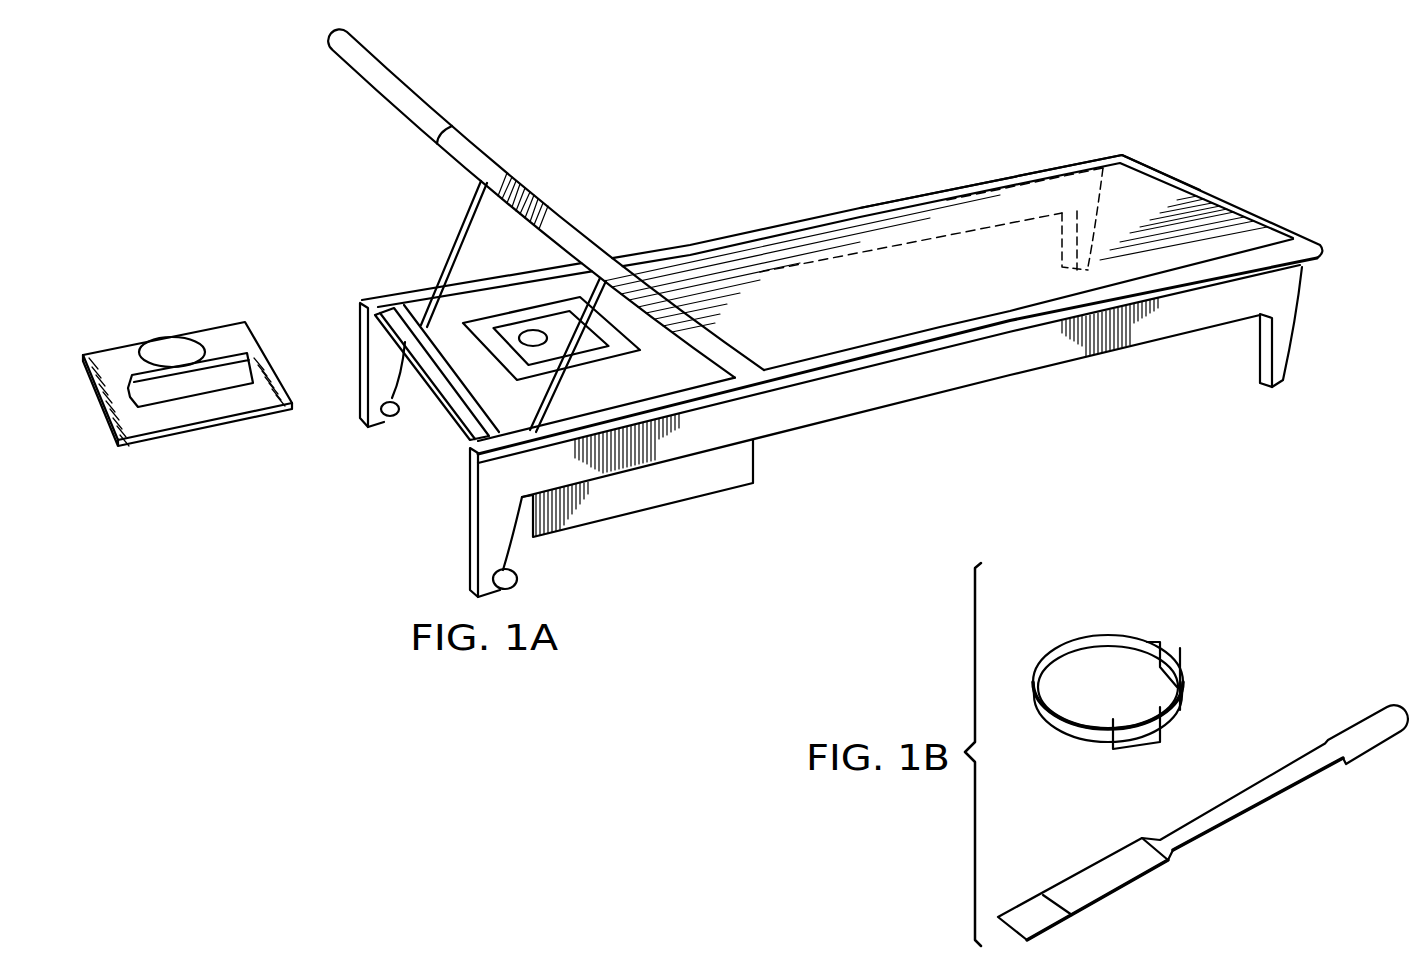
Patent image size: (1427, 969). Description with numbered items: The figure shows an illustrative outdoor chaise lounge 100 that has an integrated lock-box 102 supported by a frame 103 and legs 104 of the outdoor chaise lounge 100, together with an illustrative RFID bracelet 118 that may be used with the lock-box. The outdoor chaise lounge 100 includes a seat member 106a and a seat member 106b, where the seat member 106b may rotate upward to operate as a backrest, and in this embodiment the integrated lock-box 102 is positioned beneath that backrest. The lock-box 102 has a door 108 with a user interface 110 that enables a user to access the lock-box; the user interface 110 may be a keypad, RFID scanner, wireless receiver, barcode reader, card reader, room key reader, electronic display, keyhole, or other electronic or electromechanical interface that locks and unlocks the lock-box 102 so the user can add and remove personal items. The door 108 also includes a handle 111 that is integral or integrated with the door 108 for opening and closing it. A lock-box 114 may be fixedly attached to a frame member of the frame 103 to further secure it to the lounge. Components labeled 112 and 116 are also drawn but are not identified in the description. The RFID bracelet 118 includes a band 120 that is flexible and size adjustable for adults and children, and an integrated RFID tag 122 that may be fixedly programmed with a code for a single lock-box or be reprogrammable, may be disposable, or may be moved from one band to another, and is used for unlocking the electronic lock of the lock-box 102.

In FIG. 1A, the outdoor chaise lounge 100 is at (715, 313).
In FIG. 1A, the integrated lock-box 102 is at (480, 266).
In FIG. 1A, the frame 103 is at (985, 372).
In FIG. 1A, the legs 104 is at (358, 350).
In FIG. 1A, the seat member 106a is at (1030, 178).
In FIG. 1A, the seat member (backrest) 106b is at (388, 103).
In FIG. 1A, the door 108 is at (482, 372).
In FIG. 1A, the user interface 110 is at (533, 330).
In FIG. 1A, the handle 111 is at (190, 390).
In FIG. 1A, the platform deck 112 is at (653, 388).
In FIG. 1A, the lock-box 114 is at (625, 500).
In FIG. 1A, the track 116 is at (484, 408).
In FIG. 1B, the RFID bracelet 118 is at (1203, 752).
In FIG. 1B, the band 120 is at (1110, 638).
In FIG. 1B, the RFID tag 122 is at (1170, 718).